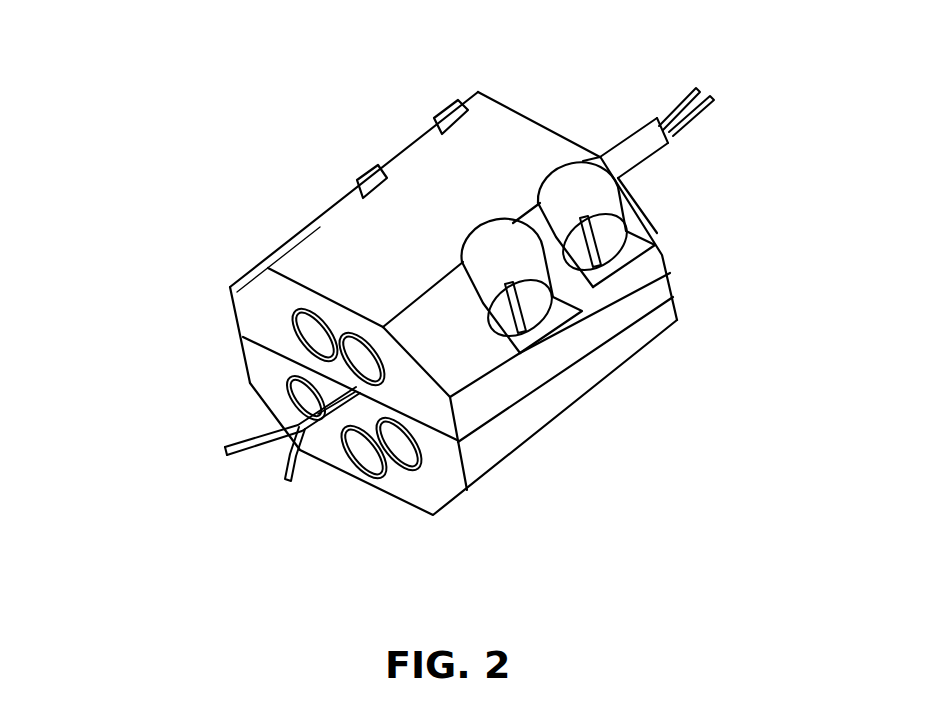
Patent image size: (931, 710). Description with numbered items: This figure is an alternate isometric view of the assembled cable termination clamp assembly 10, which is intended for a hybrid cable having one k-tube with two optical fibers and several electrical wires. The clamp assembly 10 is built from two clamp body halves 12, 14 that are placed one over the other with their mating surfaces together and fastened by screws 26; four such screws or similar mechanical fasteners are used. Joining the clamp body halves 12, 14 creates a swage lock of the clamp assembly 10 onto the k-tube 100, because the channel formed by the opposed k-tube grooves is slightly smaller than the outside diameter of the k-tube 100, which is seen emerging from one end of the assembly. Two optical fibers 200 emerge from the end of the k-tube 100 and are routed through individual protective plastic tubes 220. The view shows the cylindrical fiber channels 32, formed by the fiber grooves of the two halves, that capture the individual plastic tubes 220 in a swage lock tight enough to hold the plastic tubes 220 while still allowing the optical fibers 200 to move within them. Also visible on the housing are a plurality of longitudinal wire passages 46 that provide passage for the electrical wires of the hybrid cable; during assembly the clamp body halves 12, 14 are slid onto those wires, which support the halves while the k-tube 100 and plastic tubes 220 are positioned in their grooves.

The cable termination clamp assembly 10 is at (459, 308).
The clamp body half 12 is at (283, 245).
The clamp body half 14 is at (498, 470).
The screws 26 is at (603, 258).
The fiber channels 32 is at (358, 395).
The longitudinal wire passages 46 is at (305, 343).
The k-tube 100 is at (657, 152).
The optical fibers 200 is at (243, 446).
The protective plastic tubes 220 is at (296, 393).